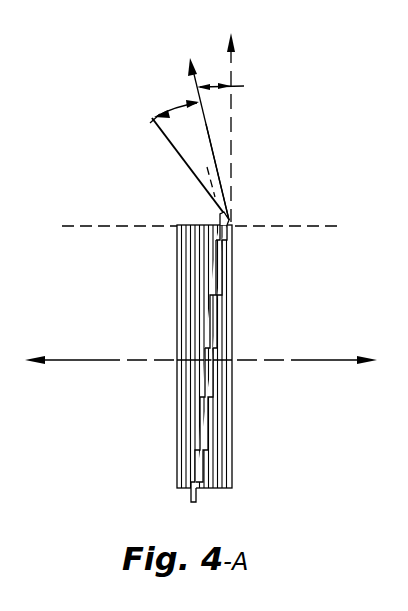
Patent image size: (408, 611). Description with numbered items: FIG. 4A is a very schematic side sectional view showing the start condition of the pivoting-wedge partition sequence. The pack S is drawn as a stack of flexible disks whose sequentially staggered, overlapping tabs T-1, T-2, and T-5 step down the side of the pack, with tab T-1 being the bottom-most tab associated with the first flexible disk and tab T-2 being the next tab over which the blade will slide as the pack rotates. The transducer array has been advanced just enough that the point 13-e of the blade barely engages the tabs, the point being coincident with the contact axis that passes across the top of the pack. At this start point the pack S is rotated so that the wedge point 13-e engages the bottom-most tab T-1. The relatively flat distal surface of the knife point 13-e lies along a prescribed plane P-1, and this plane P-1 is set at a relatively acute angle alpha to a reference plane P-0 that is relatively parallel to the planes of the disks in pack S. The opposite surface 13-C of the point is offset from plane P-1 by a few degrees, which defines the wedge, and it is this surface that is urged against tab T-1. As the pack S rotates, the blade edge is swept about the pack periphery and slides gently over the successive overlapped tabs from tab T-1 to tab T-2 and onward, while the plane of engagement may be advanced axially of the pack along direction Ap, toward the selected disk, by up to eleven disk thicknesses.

The pack S is at (240, 325).
The bottom-most tab T-1 is at (218, 217).
The tab T-2 is at (217, 262).
The tab T-5 is at (204, 413).
The opposite surface of point 13-C is at (182, 158).
The blade edge point 13-e is at (213, 143).
The reference plane P-0 is at (228, 116).
The prescribed plane P-1 is at (199, 128).
The axial direction Ap is at (201, 360).